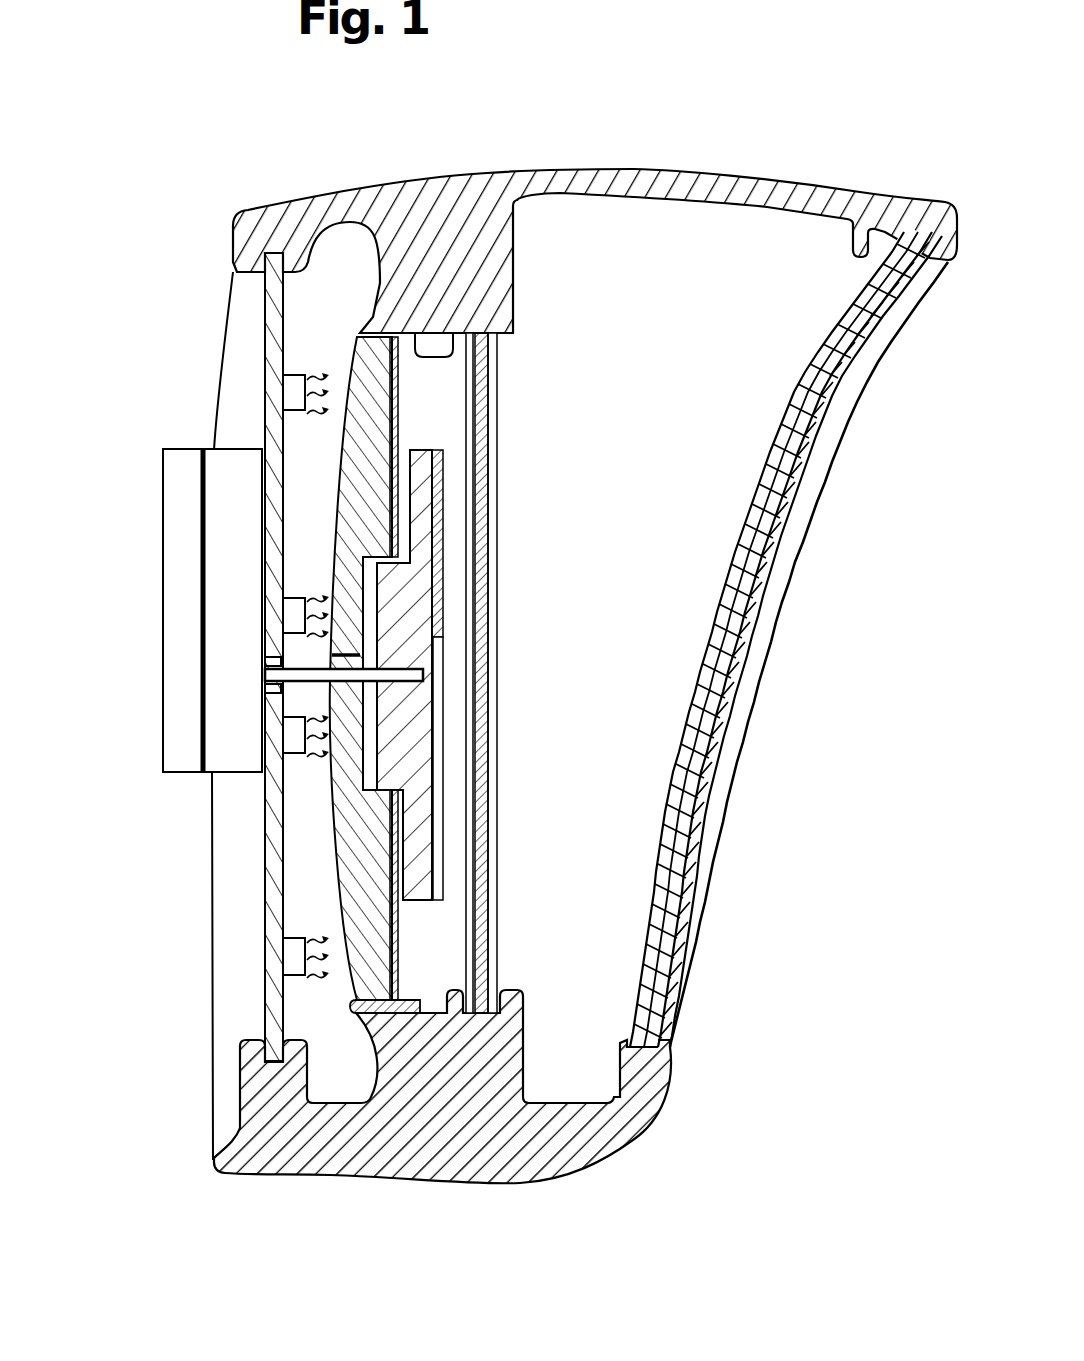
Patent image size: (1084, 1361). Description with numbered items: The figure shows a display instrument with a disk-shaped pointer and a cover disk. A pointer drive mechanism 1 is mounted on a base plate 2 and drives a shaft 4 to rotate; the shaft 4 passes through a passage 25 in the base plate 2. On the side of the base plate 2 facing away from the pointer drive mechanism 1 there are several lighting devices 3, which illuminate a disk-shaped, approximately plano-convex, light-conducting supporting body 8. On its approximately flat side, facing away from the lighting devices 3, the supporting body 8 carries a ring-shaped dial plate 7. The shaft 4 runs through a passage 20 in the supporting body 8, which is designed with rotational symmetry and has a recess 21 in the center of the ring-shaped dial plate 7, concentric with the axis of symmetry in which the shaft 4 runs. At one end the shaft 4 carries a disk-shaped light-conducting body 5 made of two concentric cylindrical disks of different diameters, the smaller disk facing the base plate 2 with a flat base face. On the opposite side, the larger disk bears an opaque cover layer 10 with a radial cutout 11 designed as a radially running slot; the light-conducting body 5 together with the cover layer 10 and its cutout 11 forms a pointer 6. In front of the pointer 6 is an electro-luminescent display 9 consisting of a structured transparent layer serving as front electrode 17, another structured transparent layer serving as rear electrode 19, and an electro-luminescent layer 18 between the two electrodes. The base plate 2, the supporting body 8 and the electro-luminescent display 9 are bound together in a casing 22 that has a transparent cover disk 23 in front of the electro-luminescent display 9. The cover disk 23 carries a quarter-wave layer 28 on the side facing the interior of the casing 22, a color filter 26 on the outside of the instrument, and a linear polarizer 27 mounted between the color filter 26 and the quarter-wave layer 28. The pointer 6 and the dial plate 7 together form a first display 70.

The pointer drive mechanism 1 is at (182, 499).
The base plate 2 is at (272, 322).
The lighting devices 3 is at (292, 617).
The shaft 4 is at (318, 678).
The disk-shaped light-conducting body 5 is at (423, 500).
The pointer 6 is at (452, 707).
The dial plate 7 is at (413, 396).
The light-conducting supporting body 8 is at (340, 836).
The electro-luminescent display 9 is at (513, 911).
The opaque cover layer 10 is at (440, 463).
The radial cutout 11 is at (435, 665).
The front electrode 17 is at (495, 1008).
The electro-luminescent layer 18 is at (482, 810).
The rear electrode 19 is at (500, 360).
The passage 20 is at (332, 660).
The recess 21 is at (373, 558).
The casing 22 is at (497, 175).
The cover disk 23 is at (735, 762).
The passage 25 is at (268, 660).
The color filter 26 is at (828, 383).
The linear polarizer 27 is at (673, 875).
The λ/4 layer 28 is at (740, 580).
The first display 70 is at (413, 920).